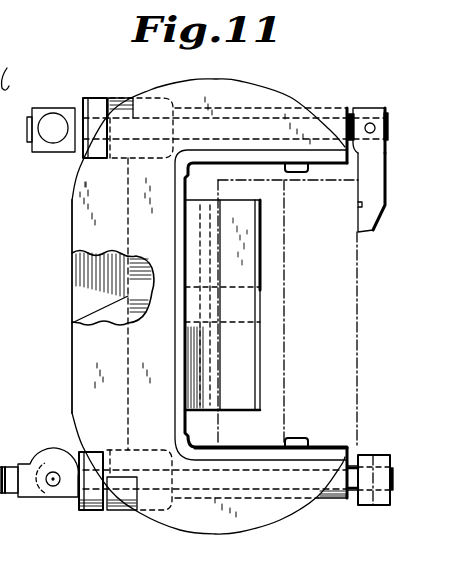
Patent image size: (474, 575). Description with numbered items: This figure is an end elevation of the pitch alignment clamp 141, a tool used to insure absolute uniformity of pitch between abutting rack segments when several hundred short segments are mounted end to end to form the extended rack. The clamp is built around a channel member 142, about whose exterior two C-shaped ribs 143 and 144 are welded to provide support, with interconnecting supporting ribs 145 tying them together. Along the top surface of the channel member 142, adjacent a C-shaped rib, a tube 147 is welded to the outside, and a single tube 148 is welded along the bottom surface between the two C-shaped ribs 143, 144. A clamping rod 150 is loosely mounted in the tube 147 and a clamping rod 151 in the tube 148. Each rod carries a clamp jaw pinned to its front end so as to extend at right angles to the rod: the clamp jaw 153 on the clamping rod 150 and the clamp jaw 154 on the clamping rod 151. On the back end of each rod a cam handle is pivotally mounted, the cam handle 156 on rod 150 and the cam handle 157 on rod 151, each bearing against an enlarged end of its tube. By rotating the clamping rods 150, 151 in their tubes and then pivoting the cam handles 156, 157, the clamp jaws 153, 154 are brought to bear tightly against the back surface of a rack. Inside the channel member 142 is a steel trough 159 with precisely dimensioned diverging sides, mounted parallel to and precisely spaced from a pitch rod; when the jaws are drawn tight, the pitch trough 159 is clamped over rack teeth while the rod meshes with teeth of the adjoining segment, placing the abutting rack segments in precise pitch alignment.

The alignment clamp 141 is at (289, 83).
The channel member 142 is at (237, 160).
The C-shaped rib 143 is at (72, 287).
The C-shaped rib 144 is at (88, 362).
The interconnecting supporting ribs 145 is at (72, 318).
The tube 147 is at (332, 107).
The tube 148 is at (336, 500).
The clamping rod 150 is at (351, 109).
The clamping rod 151 is at (352, 497).
The clamp jaw 153 is at (373, 224).
The clamp jaw 154 is at (373, 456).
The cam handle 156 is at (55, 118).
The cam handle 157 is at (1, 453).
The steel trough 159 is at (262, 273).